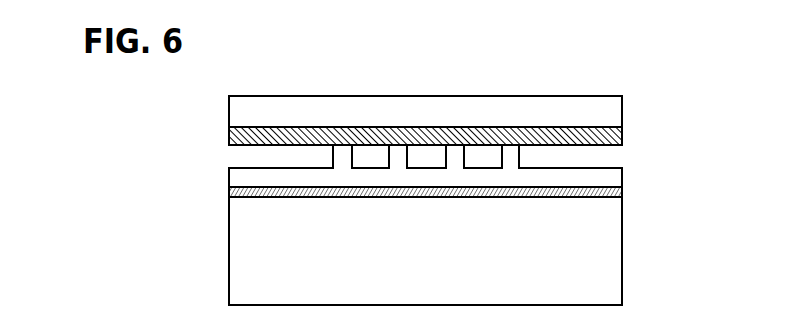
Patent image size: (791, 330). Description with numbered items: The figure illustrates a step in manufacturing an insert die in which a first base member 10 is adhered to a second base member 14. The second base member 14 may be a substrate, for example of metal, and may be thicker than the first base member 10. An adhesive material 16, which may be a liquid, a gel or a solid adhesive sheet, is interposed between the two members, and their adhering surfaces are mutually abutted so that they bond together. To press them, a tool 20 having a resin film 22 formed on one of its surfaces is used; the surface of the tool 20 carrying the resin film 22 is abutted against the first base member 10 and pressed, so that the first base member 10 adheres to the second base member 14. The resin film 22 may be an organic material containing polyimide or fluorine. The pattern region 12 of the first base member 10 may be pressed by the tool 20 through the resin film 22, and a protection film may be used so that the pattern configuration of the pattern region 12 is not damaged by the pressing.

The tool 20 is at (622, 105).
The resin film 22 is at (622, 132).
The first base member 10 is at (622, 169).
The pattern region 12 is at (329, 160).
The adhesive material 16 is at (622, 192).
The second base member 14 is at (622, 253).